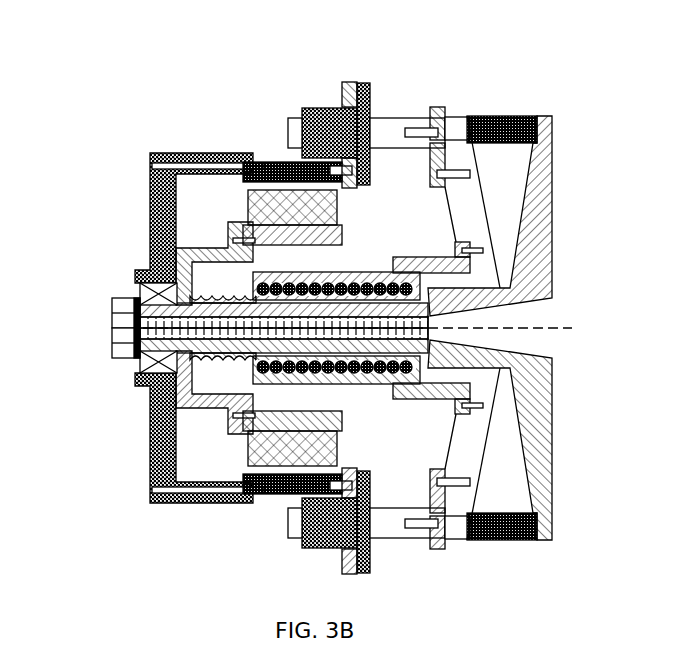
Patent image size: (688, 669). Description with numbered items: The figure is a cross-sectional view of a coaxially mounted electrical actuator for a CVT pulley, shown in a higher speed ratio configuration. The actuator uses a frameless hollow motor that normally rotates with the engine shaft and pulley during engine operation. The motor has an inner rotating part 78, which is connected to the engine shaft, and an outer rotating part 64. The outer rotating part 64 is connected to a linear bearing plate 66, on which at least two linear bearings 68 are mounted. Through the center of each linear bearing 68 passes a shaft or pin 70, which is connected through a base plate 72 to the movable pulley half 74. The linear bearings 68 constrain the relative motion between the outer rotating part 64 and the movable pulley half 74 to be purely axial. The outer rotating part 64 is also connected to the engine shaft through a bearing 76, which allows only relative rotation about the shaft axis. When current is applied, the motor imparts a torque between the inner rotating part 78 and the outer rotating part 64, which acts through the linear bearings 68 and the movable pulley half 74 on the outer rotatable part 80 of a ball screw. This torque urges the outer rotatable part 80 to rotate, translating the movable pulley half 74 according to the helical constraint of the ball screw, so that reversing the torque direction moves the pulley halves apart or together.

The outer rotating part 64 is at (133, 162).
The linear bearing plate 66 is at (343, 90).
The linear bearing 68 is at (276, 127).
The shaft or pin 70 is at (382, 122).
The base plate 72 is at (435, 108).
The movable pulley half 74 is at (457, 143).
The bearing 76 is at (137, 287).
The inner rotating part 78 is at (198, 431).
The outer rotatable part of ball screw 80 is at (362, 388).